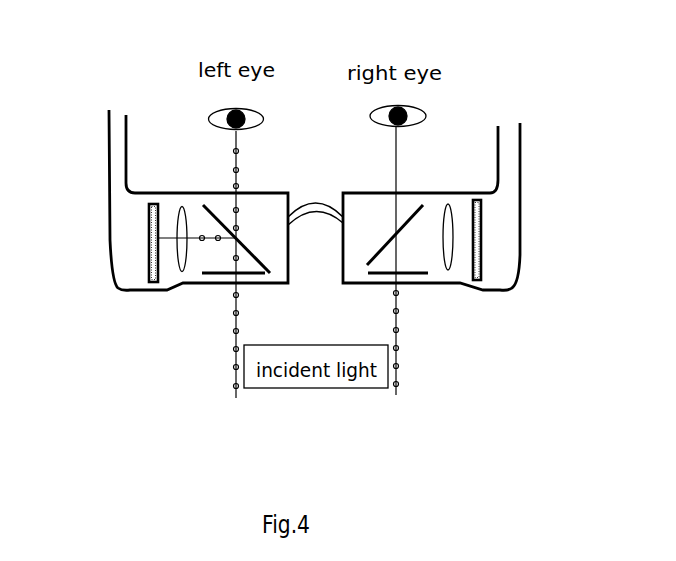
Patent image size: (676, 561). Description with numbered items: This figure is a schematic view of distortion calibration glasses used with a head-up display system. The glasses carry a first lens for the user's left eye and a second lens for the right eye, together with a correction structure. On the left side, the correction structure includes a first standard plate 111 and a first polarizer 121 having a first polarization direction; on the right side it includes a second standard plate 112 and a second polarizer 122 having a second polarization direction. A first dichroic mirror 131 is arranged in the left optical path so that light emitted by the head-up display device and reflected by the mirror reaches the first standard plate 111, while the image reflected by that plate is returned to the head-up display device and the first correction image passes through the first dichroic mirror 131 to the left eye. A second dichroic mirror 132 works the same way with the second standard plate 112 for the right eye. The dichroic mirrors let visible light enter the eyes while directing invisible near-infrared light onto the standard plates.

The first standard plate 111 is at (149, 242).
The second standard plate 112 is at (480, 243).
The first polarizer 121 is at (217, 273).
The second polarizer 122 is at (428, 273).
The first dichroic mirror 131 is at (204, 205).
The second dichroic mirror 132 is at (422, 205).